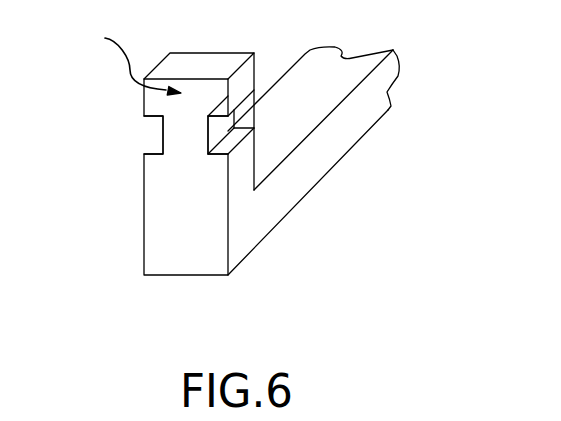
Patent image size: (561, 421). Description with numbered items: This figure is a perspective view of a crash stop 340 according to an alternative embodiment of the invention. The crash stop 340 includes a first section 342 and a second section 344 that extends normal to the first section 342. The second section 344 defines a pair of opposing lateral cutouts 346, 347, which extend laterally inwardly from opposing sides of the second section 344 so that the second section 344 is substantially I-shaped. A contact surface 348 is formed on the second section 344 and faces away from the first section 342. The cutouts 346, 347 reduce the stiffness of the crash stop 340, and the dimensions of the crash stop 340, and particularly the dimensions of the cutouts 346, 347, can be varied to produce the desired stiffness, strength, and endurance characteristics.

The crash stop 340 is at (244, 161).
The first section 342 is at (351, 131).
The second section 344 is at (178, 164).
The lateral cutout 346 is at (231, 138).
The lateral cutout 347 is at (157, 129).
The contact surface 348 is at (121, 59).